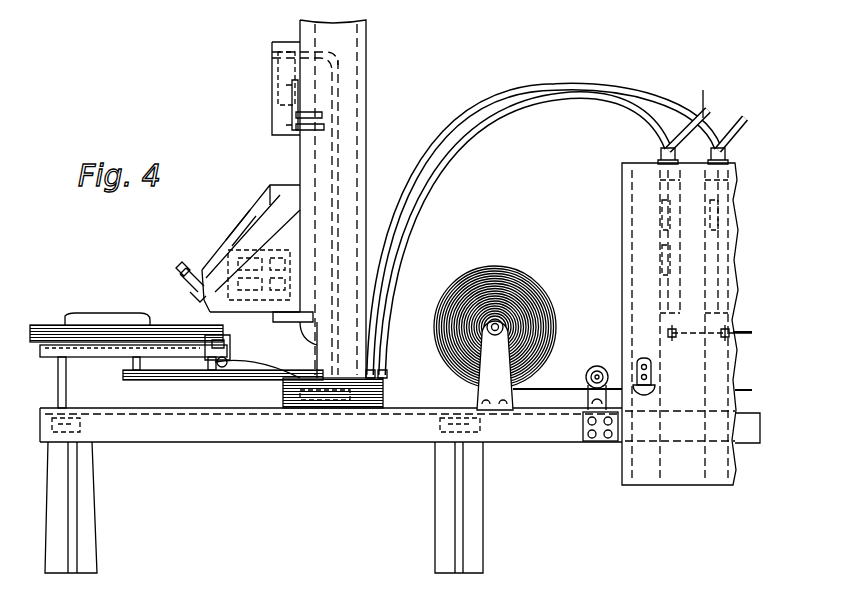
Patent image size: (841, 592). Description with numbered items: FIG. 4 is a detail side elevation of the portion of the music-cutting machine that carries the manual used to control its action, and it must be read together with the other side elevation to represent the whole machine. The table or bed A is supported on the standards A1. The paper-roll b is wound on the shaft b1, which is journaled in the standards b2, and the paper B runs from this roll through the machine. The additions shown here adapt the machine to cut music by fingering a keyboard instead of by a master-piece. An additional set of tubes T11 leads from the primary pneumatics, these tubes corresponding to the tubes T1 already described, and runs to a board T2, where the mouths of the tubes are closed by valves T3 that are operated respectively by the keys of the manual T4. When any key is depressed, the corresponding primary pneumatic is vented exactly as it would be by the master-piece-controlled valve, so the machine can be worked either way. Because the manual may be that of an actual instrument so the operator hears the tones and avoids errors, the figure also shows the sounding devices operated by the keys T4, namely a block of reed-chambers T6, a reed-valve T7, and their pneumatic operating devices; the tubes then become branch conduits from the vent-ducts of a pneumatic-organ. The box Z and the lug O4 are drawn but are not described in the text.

The table or bed A is at (290, 442).
The standards A1 is at (84, 498).
The paper B is at (556, 389).
The tubes T1 is at (736, 124).
The board T2 is at (340, 385).
The valves T3 is at (300, 385).
The manual T4 is at (95, 330).
The block of reed-chambers T6 is at (256, 298).
The reed-valve T7 is at (235, 258).
The additional set of tubes T11 is at (418, 180).
The paper-roll b is at (495, 283).
The shaft b1 is at (500, 322).
The standards b2 is at (488, 373).
The box Z is at (690, 275).
The bracket lug O4 is at (655, 385).